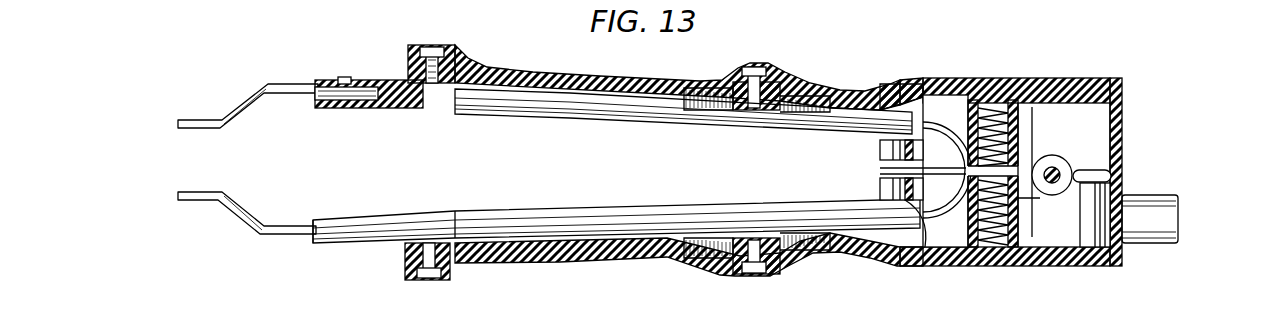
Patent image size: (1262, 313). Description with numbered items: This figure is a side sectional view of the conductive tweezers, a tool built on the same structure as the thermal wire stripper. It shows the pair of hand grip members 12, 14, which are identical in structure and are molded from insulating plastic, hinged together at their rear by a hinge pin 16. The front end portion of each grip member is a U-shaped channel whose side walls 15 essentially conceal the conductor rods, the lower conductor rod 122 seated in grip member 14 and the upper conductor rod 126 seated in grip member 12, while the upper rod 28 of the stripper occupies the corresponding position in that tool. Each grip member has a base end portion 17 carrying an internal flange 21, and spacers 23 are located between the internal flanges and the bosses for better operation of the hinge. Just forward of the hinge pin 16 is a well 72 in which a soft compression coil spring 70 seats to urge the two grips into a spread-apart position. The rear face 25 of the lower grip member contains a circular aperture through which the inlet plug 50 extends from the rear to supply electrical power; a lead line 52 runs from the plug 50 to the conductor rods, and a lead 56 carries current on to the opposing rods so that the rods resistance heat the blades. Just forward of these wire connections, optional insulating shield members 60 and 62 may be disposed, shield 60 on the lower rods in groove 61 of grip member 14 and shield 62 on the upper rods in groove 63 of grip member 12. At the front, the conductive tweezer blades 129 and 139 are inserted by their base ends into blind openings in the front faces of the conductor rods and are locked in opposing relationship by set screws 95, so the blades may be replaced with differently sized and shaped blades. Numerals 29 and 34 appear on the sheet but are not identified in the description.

The hand grip member 12 is at (537, 80).
The hand grip member 14 is at (577, 250).
The side walls 15 is at (553, 208).
The hinge pin 16 is at (1068, 144).
The base end portion 17 is at (1010, 78).
The internal flange 21 is at (1026, 10).
The spacers 23 is at (1051, 189).
The rear face 25 is at (1112, 184).
The conductor rod 28 is at (1261, 306).
The screws 29 is at (434, 46).
The reference from adjacent figure 34 is at (951, 9).
The plug 50 is at (1172, 214).
The lead line 52 is at (915, 262).
The lead 56 is at (947, 171).
The shield member 60 is at (911, 200).
The groove 61 is at (902, 86).
The shield member 62 is at (880, 152).
The groove 63 is at (880, 188).
The compression coil spring 70 is at (1018, 130).
The well 72 is at (1035, 86).
The set screw 95 is at (345, 77).
The conductor rod 122 is at (367, 218).
The conductor rod 126 is at (352, 108).
The conductive tweezer blade 129 is at (255, 108).
The conductive tweezer blade 139 is at (233, 218).